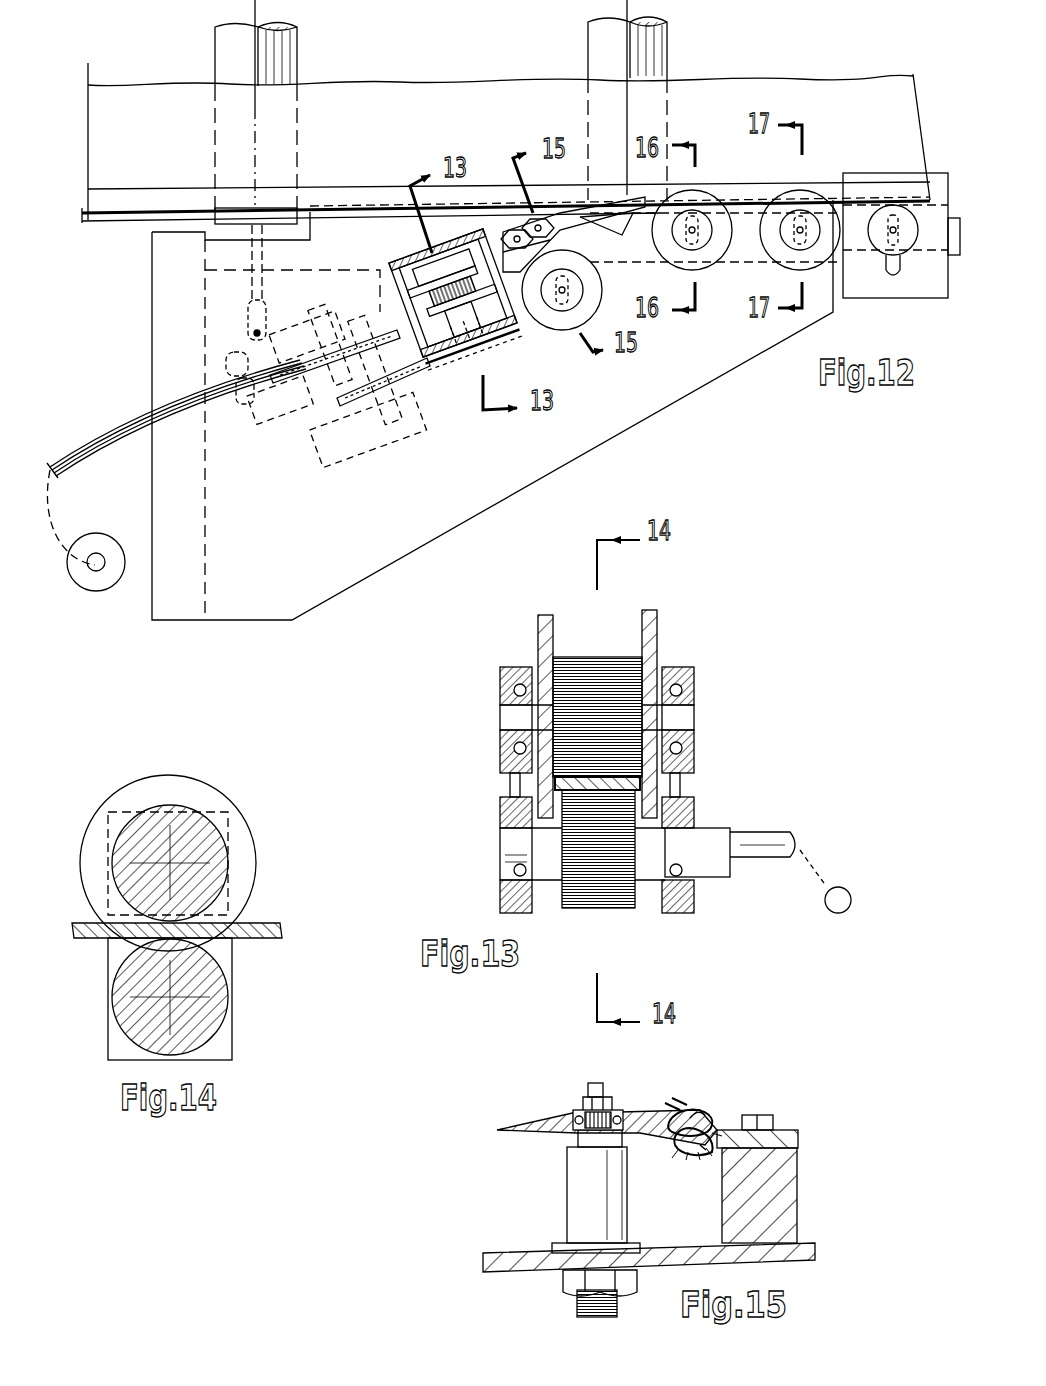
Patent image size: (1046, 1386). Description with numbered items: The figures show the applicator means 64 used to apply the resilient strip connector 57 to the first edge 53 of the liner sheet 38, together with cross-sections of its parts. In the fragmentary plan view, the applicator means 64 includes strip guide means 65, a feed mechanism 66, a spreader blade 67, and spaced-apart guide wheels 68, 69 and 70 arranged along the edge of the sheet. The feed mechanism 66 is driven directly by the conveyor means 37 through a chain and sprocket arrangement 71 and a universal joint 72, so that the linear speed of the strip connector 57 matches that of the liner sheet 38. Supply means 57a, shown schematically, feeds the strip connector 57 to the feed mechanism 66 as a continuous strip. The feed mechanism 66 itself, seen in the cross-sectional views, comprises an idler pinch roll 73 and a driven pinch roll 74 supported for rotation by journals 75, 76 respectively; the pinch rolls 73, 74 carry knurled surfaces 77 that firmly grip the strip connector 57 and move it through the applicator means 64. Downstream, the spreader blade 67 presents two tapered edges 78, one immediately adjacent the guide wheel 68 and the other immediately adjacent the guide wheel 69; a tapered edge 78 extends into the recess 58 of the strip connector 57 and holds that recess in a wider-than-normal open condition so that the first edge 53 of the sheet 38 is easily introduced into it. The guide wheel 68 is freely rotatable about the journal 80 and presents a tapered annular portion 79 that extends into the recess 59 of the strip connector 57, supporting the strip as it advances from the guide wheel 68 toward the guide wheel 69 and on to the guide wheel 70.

In FIG. 12, the conveyor means 37 is at (212, 41).
In FIG. 12, the liner sheet 38 is at (724, 66).
In FIG. 12, the first edge 53 is at (122, 203).
In FIG. 12, the resilient strip connector 57 is at (92, 440).
In FIG. 13, the resilient strip connector 57 is at (645, 782).
In FIG. 14, the resilient strip connector 57 is at (287, 923).
In FIG. 15, the resilient strip connector 57 is at (712, 1106).
In FIG. 12, the supply means 57a is at (77, 588).
In FIG. 15, the recess 58 is at (697, 1157).
In FIG. 15, the recess 59 is at (670, 1117).
In FIG. 12, the applicator means 64 is at (464, 499).
In FIG. 12, the strip guide means 65 is at (236, 400).
In FIG. 12, the feed mechanism 66 is at (428, 340).
In FIG. 13, the feed mechanism 66 is at (680, 624).
In FIG. 14, the feed mechanism 66 is at (262, 807).
In FIG. 12, the spreader blade 67 is at (557, 230).
In FIG. 15, the spreader blade 67 is at (792, 1130).
In FIG. 12, the guide wheel 68 is at (578, 312).
In FIG. 15, the guide wheel 68 is at (535, 1112).
In FIG. 12, the guide wheel 69 is at (700, 207).
In FIG. 12, the guide wheel 70 is at (790, 200).
In FIG. 12, the chain and sprocket arrangement 71 is at (323, 409).
In FIG. 13, the chain and sprocket arrangement 71 is at (840, 914).
In FIG. 12, the universal joint 72 is at (268, 313).
In FIG. 13, the idler pinch roll 73 is at (610, 650).
In FIG. 14, the idler pinch roll 73 is at (180, 792).
In FIG. 13, the driven pinch roll 74 is at (613, 910).
In FIG. 14, the driven pinch roll 74 is at (220, 1033).
In FIG. 13, the journals 75 is at (513, 702).
In FIG. 13, the journals 76 is at (512, 887).
In FIG. 13, the knurled surfaces 77 is at (548, 725).
In FIG. 14, the knurled surfaces 77 is at (227, 882).
In FIG. 12, the tapered edges 78 is at (627, 233).
In FIG. 15, the tapered edges 78 is at (718, 1150).
In FIG. 15, the tapered annular portion 79 is at (500, 1132).
In FIG. 15, the journal 80 is at (573, 1112).